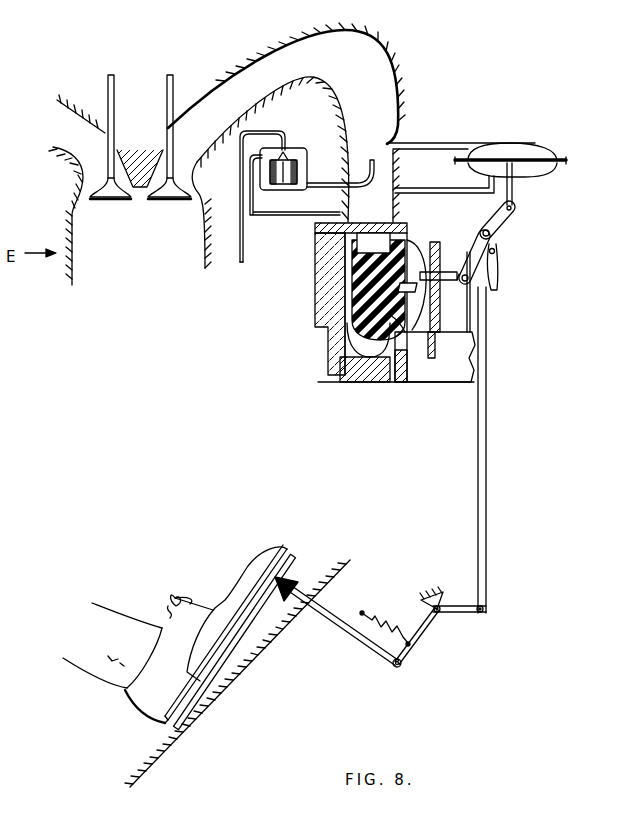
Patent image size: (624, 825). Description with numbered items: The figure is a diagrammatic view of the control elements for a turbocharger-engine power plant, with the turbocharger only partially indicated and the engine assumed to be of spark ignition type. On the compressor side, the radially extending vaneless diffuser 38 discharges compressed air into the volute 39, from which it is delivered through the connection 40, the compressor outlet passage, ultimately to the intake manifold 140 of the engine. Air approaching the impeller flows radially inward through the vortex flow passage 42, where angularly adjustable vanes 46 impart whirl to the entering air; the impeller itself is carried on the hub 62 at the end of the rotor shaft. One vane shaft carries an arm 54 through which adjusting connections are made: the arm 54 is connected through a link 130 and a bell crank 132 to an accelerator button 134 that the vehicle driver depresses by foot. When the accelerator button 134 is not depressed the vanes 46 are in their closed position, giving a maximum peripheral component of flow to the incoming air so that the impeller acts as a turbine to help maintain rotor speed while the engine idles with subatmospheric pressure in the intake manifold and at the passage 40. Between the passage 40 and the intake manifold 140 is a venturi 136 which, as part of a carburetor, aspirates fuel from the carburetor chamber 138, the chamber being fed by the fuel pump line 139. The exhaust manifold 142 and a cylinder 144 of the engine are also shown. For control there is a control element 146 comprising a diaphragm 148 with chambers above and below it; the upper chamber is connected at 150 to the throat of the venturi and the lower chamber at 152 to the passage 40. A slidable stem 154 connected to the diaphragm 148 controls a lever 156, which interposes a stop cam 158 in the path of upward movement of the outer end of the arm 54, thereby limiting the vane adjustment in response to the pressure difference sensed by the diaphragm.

The vaneless diffuser 38 is at (350, 287).
The volute 39 is at (375, 240).
The connection 40 is at (400, 218).
The vortex flow passage 42 is at (418, 330).
The vanes 46 is at (418, 262).
The arm 54 is at (484, 286).
The hub of the impeller 62 is at (362, 372).
The link 130 is at (487, 379).
The bell crank 132 is at (413, 644).
The accelerator button 134 is at (294, 572).
The venturi 136 is at (365, 146).
The carburetor chamber 138 is at (294, 132).
The fuel pump line 139 is at (244, 253).
The intake manifold 140 is at (183, 154).
The exhaust manifold 142 is at (76, 131).
The cylinder 144 is at (96, 258).
The control element 146 is at (530, 131).
The diaphragm 148 is at (494, 158).
The upper chamber connection 150 is at (435, 143).
The lower chamber connection 152 is at (432, 187).
The slidable stem 154 is at (514, 191).
The lever 156 is at (502, 222).
The stop cam 158 is at (499, 243).